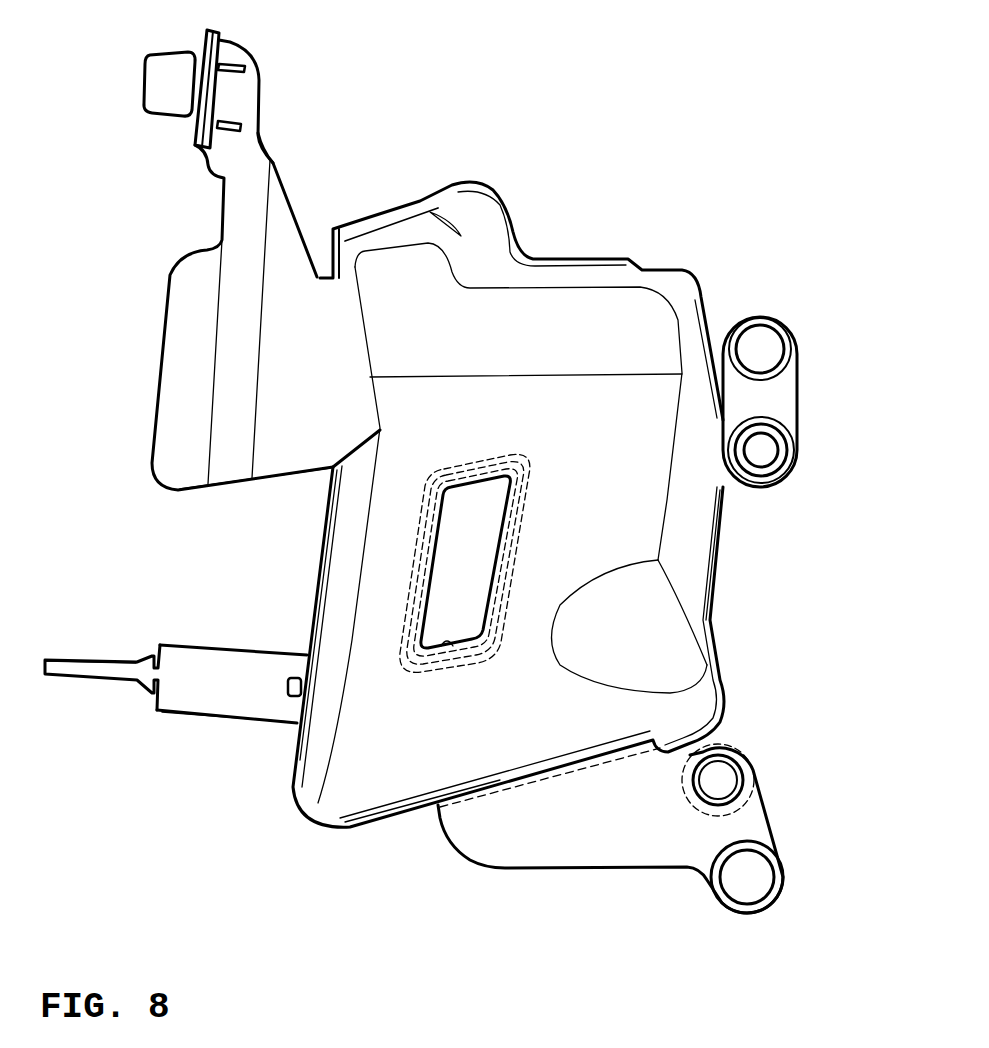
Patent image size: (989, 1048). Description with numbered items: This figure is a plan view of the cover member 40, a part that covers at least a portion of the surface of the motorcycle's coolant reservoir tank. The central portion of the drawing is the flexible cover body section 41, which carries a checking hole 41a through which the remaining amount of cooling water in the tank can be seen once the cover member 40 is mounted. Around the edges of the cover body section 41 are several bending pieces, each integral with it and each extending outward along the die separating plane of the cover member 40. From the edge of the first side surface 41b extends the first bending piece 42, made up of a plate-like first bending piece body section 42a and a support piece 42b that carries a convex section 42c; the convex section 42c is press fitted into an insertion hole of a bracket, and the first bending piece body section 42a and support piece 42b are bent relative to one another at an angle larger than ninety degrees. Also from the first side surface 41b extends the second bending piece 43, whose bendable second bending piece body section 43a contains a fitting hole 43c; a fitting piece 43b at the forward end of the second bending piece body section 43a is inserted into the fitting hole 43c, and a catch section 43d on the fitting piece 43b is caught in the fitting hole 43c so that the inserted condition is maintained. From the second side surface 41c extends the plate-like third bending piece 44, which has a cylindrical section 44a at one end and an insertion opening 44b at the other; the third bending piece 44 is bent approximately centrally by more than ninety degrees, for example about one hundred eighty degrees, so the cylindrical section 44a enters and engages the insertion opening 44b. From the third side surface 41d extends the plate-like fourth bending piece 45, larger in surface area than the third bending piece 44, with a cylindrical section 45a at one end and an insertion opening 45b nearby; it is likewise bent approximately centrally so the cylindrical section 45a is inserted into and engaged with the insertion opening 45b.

The cover member 40 is at (606, 193).
The cover body section 41 is at (668, 262).
The checking hole 41a is at (447, 641).
The first side surface 41b is at (350, 565).
The second side surface 41c is at (717, 570).
The third side surface 41d is at (397, 817).
The first bending piece 42 is at (155, 490).
The first bending piece body section 42a is at (225, 487).
The support piece 42b is at (265, 138).
The convex section 42c is at (147, 113).
The second bending piece 43 is at (167, 713).
The second bending piece body section 43a is at (200, 713).
The fitting piece 43b is at (67, 673).
The fitting hole 43c is at (287, 700).
The catch section 43d is at (153, 657).
The third bending piece 44 is at (802, 382).
The cylindrical section 44a is at (786, 450).
The insertion opening 44b is at (762, 340).
The fourth bending piece 45 is at (573, 870).
The cylindrical section 45a is at (740, 767).
The insertion opening 45b is at (748, 887).